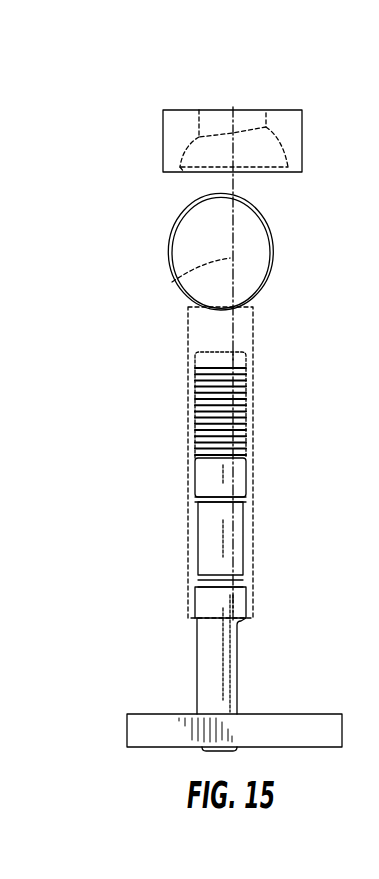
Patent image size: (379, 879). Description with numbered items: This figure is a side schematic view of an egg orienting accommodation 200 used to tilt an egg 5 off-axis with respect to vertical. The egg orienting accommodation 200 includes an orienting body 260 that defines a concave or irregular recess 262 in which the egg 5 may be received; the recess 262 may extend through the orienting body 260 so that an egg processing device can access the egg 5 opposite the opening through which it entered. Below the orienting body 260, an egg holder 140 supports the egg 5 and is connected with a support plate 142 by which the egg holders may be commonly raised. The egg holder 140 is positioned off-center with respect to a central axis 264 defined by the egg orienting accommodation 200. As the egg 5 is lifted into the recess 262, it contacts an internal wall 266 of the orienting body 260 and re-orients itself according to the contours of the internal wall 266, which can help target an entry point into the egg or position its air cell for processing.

The egg orienting accommodation 200 is at (128, 122).
The orienting body 260 is at (283, 123).
The recess 262 is at (267, 173).
The internal wall 266 is at (193, 172).
The central axis 264 is at (172, 282).
The egg 5 is at (253, 277).
The egg holder 140 is at (168, 453).
The support plate 142 is at (290, 725).